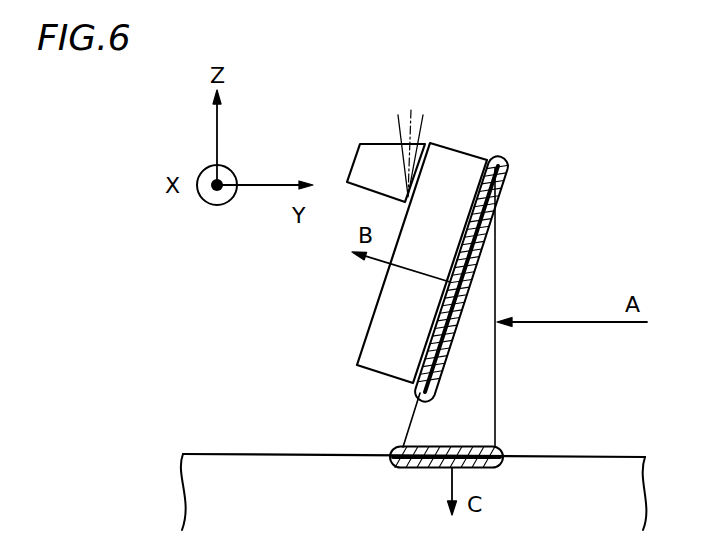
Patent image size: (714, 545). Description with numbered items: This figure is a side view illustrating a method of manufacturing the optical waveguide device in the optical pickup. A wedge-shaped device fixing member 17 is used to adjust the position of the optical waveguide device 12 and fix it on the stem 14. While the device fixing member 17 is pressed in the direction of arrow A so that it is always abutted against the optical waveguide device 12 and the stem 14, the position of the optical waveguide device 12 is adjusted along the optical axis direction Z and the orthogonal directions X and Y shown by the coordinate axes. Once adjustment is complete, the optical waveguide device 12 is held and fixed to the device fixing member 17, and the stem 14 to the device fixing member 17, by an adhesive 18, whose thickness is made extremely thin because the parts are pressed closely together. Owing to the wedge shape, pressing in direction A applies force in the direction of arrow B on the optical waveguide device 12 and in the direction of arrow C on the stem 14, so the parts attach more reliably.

The optical waveguide device 12 is at (375, 337).
The stem 14 is at (203, 482).
The device fixing member 17 is at (492, 243).
The adhesive 18 is at (473, 263).